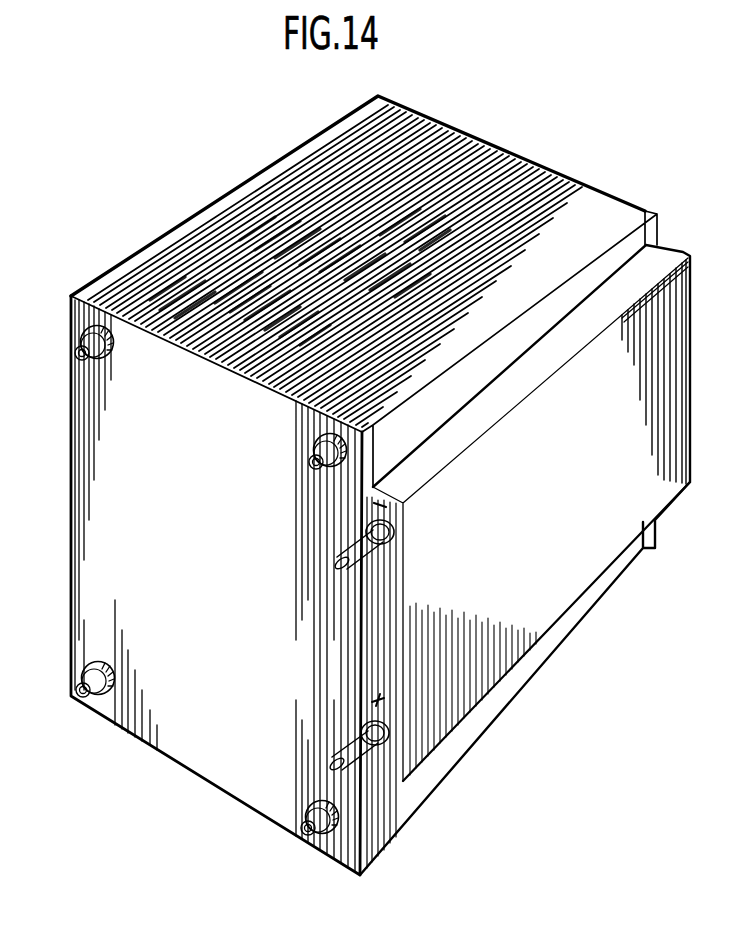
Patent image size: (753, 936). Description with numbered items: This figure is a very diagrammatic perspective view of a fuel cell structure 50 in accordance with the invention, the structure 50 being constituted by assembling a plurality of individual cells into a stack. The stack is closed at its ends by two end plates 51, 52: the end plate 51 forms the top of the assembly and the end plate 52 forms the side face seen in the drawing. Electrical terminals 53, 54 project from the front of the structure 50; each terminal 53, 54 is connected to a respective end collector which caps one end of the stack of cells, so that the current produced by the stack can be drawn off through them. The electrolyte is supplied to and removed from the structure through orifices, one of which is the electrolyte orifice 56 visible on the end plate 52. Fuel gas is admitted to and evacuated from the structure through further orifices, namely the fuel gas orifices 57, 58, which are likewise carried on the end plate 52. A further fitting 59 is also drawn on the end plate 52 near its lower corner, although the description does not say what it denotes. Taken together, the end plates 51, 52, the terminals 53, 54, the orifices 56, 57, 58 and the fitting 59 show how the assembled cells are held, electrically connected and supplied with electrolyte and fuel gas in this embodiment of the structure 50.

The fuel cell structure 50 is at (238, 184).
The end plate 51 is at (512, 152).
The end plate 52 is at (190, 733).
The electrical terminal 53 is at (374, 566).
The electrical terminal 54 is at (377, 762).
The electrolyte orifice 56 is at (78, 357).
The fuel gas orifice 57 is at (308, 834).
The fuel gas orifice 58 is at (313, 467).
The knob fastener 59 is at (76, 697).